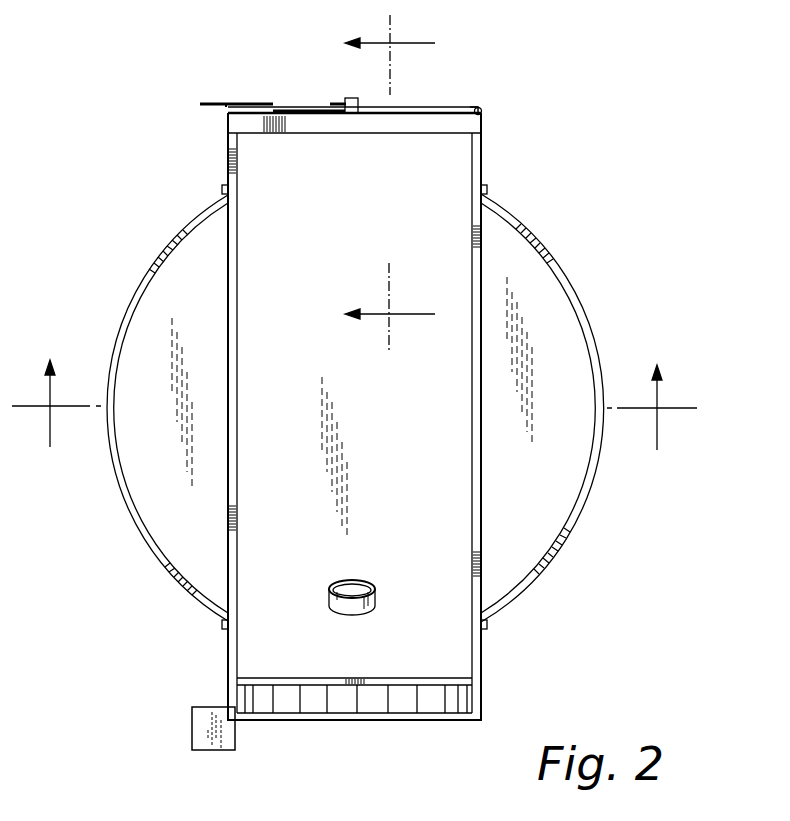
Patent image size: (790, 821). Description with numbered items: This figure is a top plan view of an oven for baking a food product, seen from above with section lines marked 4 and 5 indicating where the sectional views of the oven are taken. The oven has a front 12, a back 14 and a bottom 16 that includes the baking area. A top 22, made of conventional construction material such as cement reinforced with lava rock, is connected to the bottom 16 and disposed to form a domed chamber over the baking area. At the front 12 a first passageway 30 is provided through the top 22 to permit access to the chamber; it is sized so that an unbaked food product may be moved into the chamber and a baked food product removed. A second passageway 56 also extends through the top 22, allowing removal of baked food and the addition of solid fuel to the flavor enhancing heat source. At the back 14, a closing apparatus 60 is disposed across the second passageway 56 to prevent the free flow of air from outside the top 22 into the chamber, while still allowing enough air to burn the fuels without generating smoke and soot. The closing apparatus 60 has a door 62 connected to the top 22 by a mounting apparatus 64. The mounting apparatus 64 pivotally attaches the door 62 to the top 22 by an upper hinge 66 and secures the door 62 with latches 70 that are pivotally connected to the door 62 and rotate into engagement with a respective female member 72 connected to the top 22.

The front 12 is at (228, 660).
The back 14 is at (481, 128).
The bottom 16 is at (517, 596).
The top 22 is at (158, 303).
The first passageway 30 is at (470, 700).
The second passageway 56 is at (228, 147).
The closing apparatus 60 is at (452, 103).
The door 62 is at (287, 107).
The mounting apparatus 64 is at (480, 110).
The upper hinge 66 is at (482, 111).
The latch 70 is at (208, 103).
The female member 72 is at (227, 104).
The section line 4- 4 is at (354, 405).
The section line 5- 5 is at (390, 181).